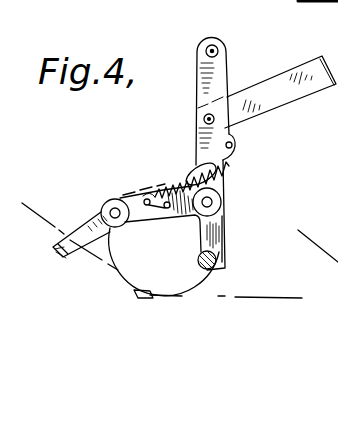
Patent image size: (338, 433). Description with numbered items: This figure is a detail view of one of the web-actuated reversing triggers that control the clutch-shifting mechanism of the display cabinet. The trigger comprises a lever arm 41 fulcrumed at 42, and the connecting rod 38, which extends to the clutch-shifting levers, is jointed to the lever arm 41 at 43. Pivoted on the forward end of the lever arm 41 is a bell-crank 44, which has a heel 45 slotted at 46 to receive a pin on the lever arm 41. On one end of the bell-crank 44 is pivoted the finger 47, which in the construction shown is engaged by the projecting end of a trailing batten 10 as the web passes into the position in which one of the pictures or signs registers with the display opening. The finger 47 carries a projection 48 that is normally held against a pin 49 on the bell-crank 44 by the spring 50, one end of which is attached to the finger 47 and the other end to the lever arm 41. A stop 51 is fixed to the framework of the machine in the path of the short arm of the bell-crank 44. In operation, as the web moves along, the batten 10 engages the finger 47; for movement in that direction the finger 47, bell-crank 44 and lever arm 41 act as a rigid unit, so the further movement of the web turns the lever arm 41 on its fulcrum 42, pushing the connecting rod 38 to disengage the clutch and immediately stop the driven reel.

The batten 10 is at (141, 299).
The connecting rod 38 is at (300, 90).
The lever arm 41 is at (225, 78).
The fulcrum 42 is at (214, 51).
The joint 43 is at (204, 119).
The bell-crank 44 is at (218, 222).
The heel 45 is at (223, 173).
The slot 46 is at (196, 165).
The finger 47 is at (104, 203).
The projection 48 is at (141, 222).
The pin 49 is at (168, 209).
The spring 50 is at (182, 178).
The stop 51 is at (216, 263).